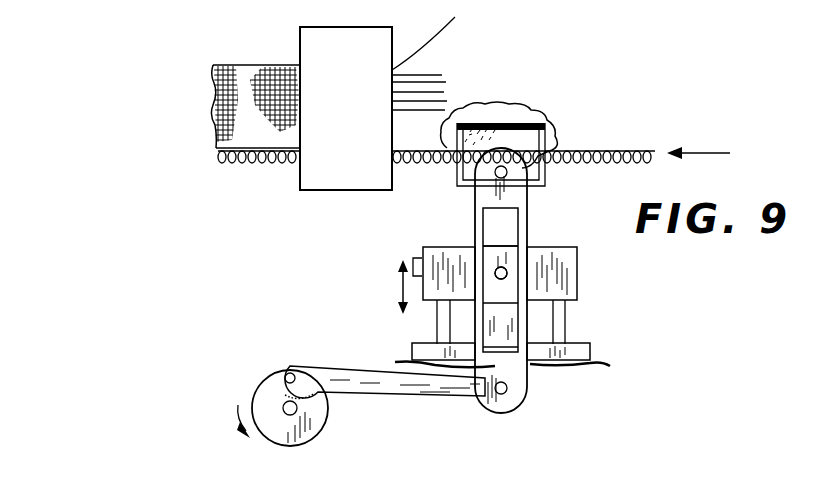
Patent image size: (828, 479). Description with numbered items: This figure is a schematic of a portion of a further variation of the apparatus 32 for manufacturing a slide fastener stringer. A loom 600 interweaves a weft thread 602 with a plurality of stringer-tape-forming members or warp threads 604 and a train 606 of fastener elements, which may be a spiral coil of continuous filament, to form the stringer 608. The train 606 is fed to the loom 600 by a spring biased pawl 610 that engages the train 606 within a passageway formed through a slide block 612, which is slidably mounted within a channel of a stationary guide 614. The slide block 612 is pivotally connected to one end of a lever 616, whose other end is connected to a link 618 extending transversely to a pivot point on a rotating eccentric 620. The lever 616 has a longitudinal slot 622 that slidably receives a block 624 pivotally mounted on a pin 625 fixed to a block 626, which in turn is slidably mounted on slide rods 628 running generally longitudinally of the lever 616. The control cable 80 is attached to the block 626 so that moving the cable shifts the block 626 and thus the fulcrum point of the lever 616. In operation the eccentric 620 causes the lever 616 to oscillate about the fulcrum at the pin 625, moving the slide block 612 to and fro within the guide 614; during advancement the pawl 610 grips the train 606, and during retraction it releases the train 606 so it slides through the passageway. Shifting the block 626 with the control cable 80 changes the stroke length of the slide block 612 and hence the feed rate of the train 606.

The yarn handling apparatus 32 is at (286, 209).
The control cable 80 is at (415, 262).
The loom 600 is at (362, 162).
The weft thread 602 is at (444, 30).
The warp threads 604 is at (428, 76).
The train of fastener elements 606 is at (618, 149).
The stringer 608 is at (247, 130).
The spring biased pawl 610 is at (561, 114).
The slide block 612 is at (530, 175).
The stationary guide 614 is at (519, 126).
The lever 616 is at (483, 200).
The link 618 is at (389, 380).
The rotating eccentric 620 is at (312, 414).
The longitudinal slot 622 is at (512, 330).
The block 624 is at (510, 260).
The pin 625 is at (497, 270).
The block 626 is at (563, 272).
The slide rods 628 is at (438, 328).